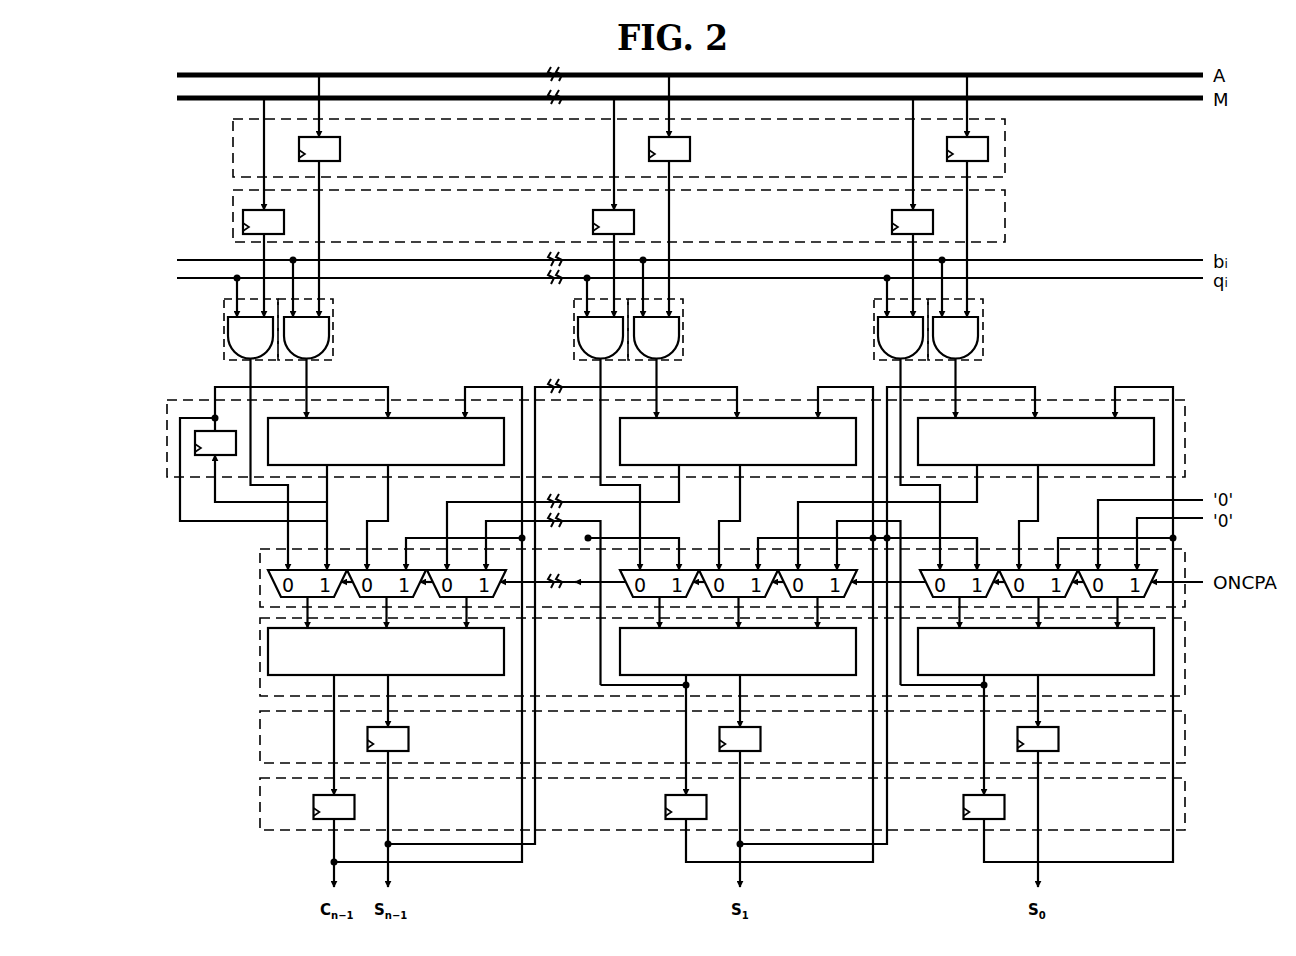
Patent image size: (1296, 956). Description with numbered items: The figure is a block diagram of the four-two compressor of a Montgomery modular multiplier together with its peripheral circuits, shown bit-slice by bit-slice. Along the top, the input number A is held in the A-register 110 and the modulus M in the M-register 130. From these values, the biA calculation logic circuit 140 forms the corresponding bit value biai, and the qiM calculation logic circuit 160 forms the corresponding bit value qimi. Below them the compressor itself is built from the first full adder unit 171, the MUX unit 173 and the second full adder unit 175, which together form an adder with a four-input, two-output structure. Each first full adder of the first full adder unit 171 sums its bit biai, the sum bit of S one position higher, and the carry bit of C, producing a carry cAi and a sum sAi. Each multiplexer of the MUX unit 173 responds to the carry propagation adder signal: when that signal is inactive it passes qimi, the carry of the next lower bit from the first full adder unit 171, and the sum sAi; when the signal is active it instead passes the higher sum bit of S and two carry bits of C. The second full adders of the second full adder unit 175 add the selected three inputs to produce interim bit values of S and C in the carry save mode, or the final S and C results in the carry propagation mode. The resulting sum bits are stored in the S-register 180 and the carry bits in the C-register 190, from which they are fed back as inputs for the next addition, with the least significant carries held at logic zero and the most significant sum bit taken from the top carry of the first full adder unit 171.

The A-register 110 is at (1007, 139).
The M-register 130 is at (1007, 211).
The biA calculation logic circuit 140 is at (333, 330).
The qiM calculation logic circuit 160 is at (224, 330).
The first full adder unit 171 is at (1187, 433).
The MUX unit 173 is at (1186, 560).
The second full adder unit 175 is at (1187, 653).
The S-register 180 is at (1187, 733).
The C-register 190 is at (1187, 800).